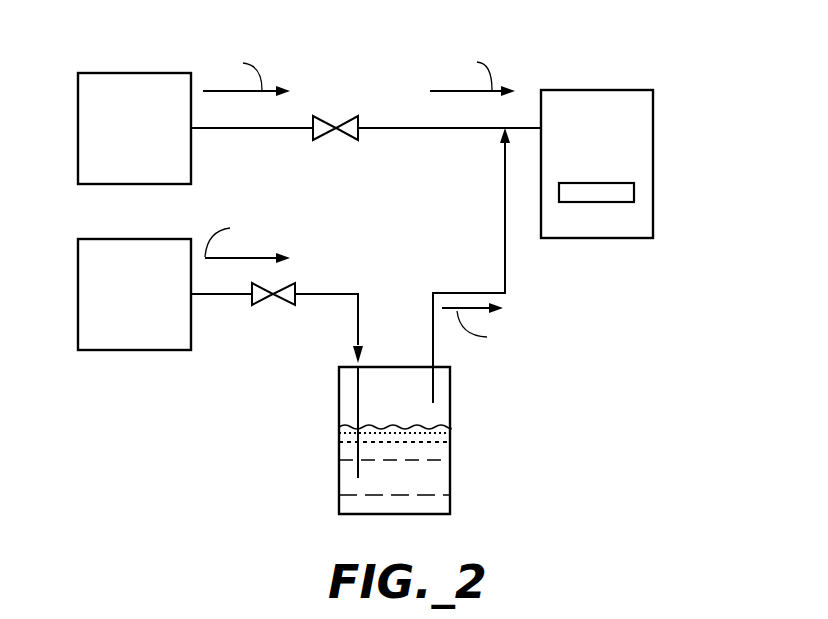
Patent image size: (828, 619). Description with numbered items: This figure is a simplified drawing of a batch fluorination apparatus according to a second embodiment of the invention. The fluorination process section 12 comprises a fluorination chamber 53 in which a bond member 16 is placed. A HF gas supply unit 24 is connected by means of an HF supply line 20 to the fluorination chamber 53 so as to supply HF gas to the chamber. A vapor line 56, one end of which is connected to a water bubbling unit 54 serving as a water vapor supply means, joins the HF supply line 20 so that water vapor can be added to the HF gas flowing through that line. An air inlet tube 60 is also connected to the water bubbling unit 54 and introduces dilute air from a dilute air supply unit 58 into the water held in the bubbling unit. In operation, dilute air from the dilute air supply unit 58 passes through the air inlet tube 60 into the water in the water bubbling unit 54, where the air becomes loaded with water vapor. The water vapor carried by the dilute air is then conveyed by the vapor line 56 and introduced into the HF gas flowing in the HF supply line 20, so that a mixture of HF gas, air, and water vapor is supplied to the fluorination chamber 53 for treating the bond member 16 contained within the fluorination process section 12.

The fluorination process section 12 is at (556, 50).
The HF gas supply unit 24 is at (158, 82).
The dilute air supply unit 58 is at (158, 250).
The fluorination chamber 53 is at (575, 100).
The bond member 16 is at (580, 192).
The HF supply line 20 is at (418, 127).
The vapor line 56 is at (490, 292).
The air inlet tube 60 is at (340, 296).
The water bubbling unit 54 is at (343, 490).